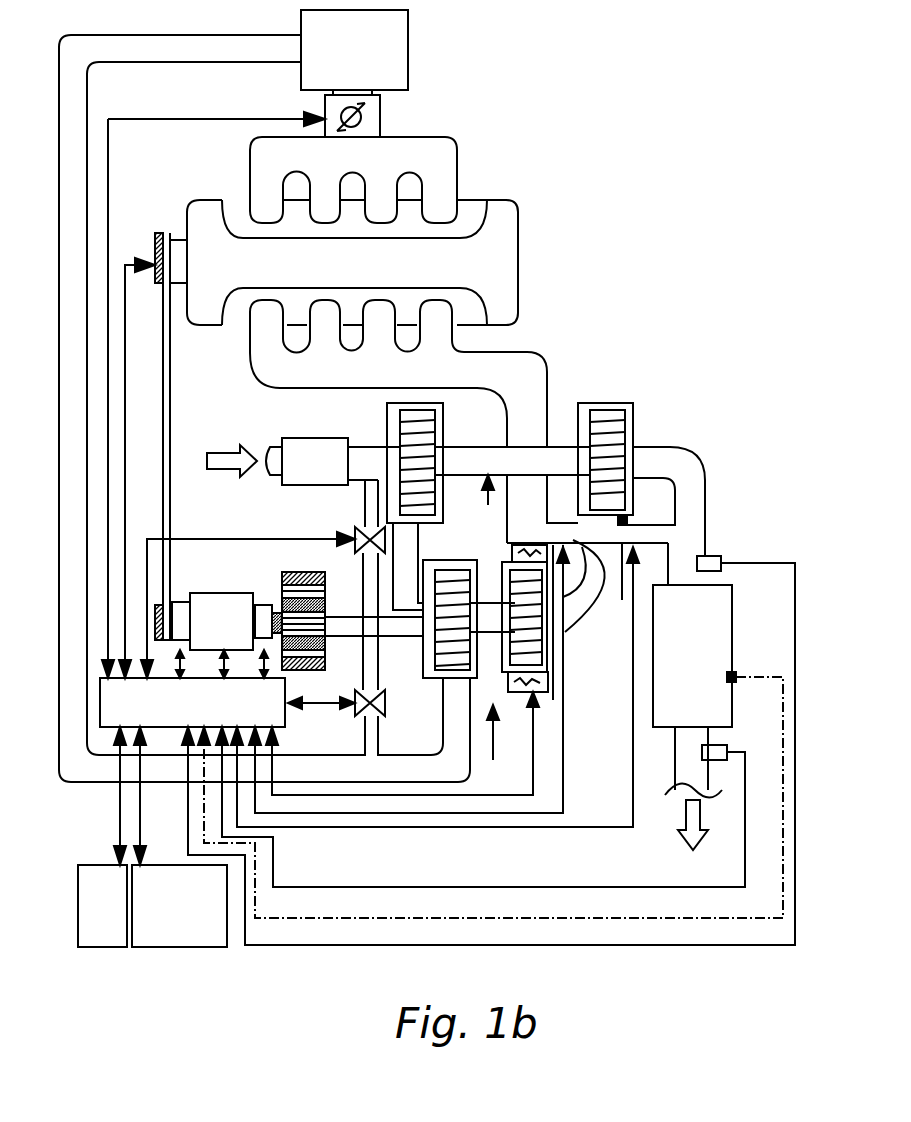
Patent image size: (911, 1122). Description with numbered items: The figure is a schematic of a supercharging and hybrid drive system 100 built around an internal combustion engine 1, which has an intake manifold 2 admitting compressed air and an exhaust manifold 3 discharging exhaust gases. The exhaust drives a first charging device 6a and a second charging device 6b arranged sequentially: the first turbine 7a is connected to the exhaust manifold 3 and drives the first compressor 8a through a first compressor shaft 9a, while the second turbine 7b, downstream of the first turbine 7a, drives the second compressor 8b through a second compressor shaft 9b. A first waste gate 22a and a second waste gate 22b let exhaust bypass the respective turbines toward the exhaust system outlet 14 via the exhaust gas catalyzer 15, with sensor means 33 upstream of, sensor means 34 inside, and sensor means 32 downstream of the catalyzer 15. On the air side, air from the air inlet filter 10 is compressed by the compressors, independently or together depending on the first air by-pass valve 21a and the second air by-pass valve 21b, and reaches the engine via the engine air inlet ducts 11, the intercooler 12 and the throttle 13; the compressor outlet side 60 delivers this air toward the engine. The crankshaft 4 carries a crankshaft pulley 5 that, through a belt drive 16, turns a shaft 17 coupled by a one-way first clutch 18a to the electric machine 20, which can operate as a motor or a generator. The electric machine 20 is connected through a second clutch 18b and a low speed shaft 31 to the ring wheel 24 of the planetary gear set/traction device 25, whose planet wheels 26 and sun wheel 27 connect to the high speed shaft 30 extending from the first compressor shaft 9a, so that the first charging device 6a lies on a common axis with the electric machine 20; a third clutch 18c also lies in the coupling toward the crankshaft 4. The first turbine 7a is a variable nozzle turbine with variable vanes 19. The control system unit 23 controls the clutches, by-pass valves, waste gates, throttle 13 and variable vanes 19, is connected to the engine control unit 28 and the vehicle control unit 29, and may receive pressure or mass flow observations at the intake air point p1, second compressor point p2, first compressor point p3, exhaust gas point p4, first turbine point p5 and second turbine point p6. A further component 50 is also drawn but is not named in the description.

The internal combustion engine 1 is at (562, 160).
The supercharging system 100 is at (662, 345).
The intake manifold 2 is at (430, 170).
The exhaust manifold 3 is at (445, 328).
The crankshaft 4 is at (167, 233).
The crankshaft pulley 5 is at (157, 235).
The first charging device 6a is at (501, 746).
The second charging device 6b is at (488, 505).
The first turbine 7a is at (548, 648).
The second turbine 7b is at (632, 485).
The first compressor 8a is at (465, 666).
The second compressor 8b is at (443, 516).
The first compressor shaft 9a is at (490, 603).
The second compressor shaft 9b is at (470, 447).
The air inlet filter 10 is at (334, 477).
The engine air inlet ducts 11 is at (59, 400).
The intercooler 12 is at (371, 55).
The throttle 13 is at (380, 112).
The exhaust system outlet 14 is at (690, 765).
The exhaust gas catalyzer 15 is at (713, 707).
The belt drive 16 is at (162, 487).
The shaft 17 is at (157, 622).
The first clutch 18a is at (195, 590).
The second clutch 18b is at (262, 605).
The third clutch 18c is at (187, 265).
The variable vanes 19 is at (548, 692).
The electric machine 20 is at (238, 637).
The first air by-pass valve 21a is at (360, 714).
The second air by-pass valve 21b is at (364, 526).
The first waste gate 22a is at (598, 530).
The second waste gate 22b is at (622, 527).
The control system unit 23 is at (209, 719).
The ring wheel 24 is at (300, 670).
The planetary gear set/traction device 25 is at (298, 604).
The planet wheels 26 is at (313, 640).
The sun wheel 27 is at (330, 617).
The engine control unit 28 is at (197, 921).
The vehicle control unit 29 is at (120, 921).
The high speed shaft 30 is at (400, 636).
The low speed shaft 31 is at (277, 539).
The sensor means 32 is at (727, 750).
The sensor means 33 is at (722, 572).
The sensor means 34 is at (738, 678).
The connecting line 50 is at (378, 612).
The compressor outlet side 60 is at (447, 680).
The intake air point p1 is at (372, 447).
The second compressor point p2 is at (417, 553).
The first compressor point p3 is at (443, 733).
The exhaust gas point p4 is at (545, 375).
The first turbine point p5 is at (592, 600).
The second turbine point p6 is at (683, 460).